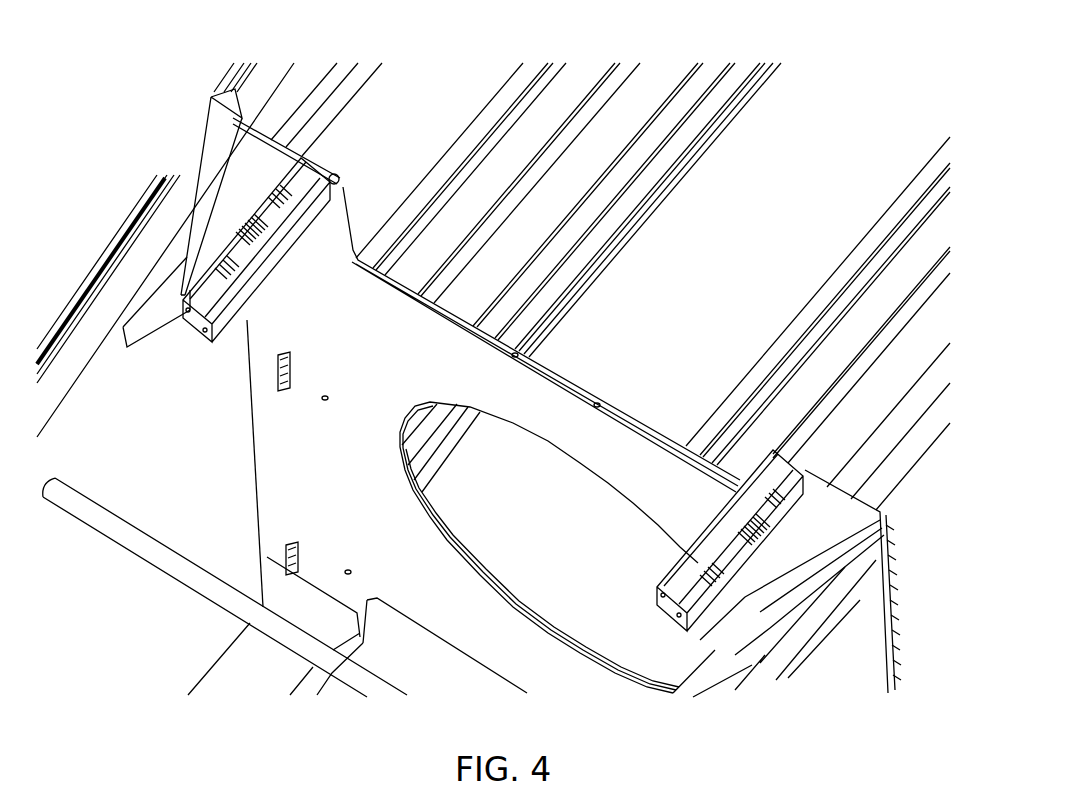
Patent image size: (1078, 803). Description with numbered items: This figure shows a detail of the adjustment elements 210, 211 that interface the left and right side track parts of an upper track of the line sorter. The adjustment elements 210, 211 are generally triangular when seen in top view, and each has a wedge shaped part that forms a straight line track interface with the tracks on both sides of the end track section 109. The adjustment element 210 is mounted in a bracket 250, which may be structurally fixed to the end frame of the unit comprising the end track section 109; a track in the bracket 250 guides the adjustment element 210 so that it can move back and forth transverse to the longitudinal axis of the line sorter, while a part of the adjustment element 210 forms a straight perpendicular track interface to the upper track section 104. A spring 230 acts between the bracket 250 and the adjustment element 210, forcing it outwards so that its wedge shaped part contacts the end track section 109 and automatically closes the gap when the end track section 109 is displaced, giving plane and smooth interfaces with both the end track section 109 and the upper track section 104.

The upper track section 104 is at (268, 120).
The end track section 109 is at (148, 245).
The adjustment element 211 is at (220, 195).
The adjustment element 210 is at (783, 555).
The bracket 250 is at (735, 507).
The spring 230 is at (733, 539).